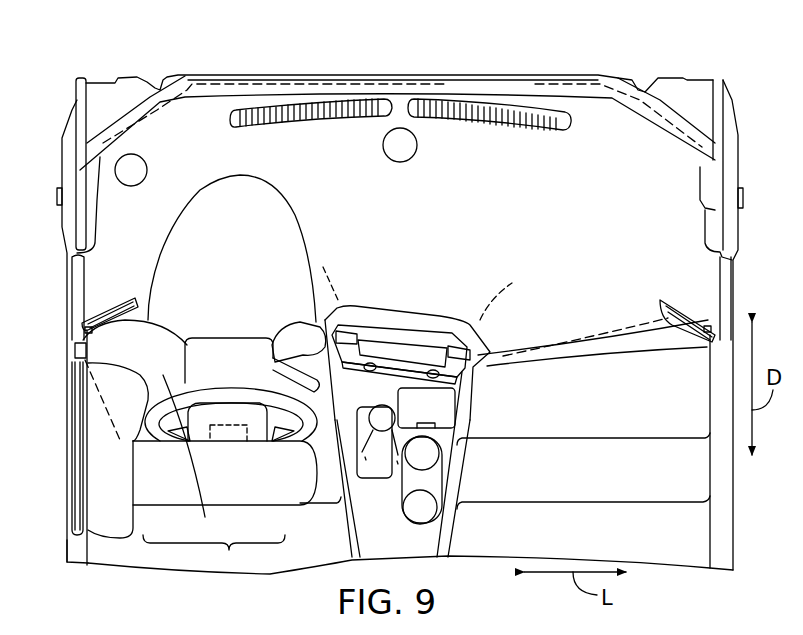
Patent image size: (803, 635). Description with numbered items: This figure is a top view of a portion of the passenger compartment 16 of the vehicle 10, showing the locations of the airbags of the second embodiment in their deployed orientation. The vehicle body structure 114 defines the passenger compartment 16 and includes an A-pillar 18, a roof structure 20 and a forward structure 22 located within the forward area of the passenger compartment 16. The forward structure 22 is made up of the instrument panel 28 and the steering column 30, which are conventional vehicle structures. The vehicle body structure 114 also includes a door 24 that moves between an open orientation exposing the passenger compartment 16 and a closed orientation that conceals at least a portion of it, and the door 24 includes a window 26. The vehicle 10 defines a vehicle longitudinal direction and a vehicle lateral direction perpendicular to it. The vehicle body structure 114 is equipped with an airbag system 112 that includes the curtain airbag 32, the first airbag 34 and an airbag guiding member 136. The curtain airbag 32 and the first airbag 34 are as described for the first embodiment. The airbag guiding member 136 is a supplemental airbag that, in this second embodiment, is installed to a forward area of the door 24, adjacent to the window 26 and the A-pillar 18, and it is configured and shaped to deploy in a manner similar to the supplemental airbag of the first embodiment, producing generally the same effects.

The vehicle 10 is at (645, 47).
The passenger compartment 16 is at (607, 175).
The A-pillar 18 is at (74, 337).
The roof structure 20 is at (80, 553).
The forward structure 22 is at (307, 142).
The door 24 is at (70, 406).
The window 26 is at (70, 493).
The instrument panel 28 is at (513, 325).
The steering column 30 is at (216, 397).
The curtain airbag 32 is at (107, 460).
The first airbag 34 is at (250, 478).
The airbag system 112 is at (214, 554).
The vehicle body structure 114 is at (530, 73).
The airbag guiding member 136 is at (196, 457).